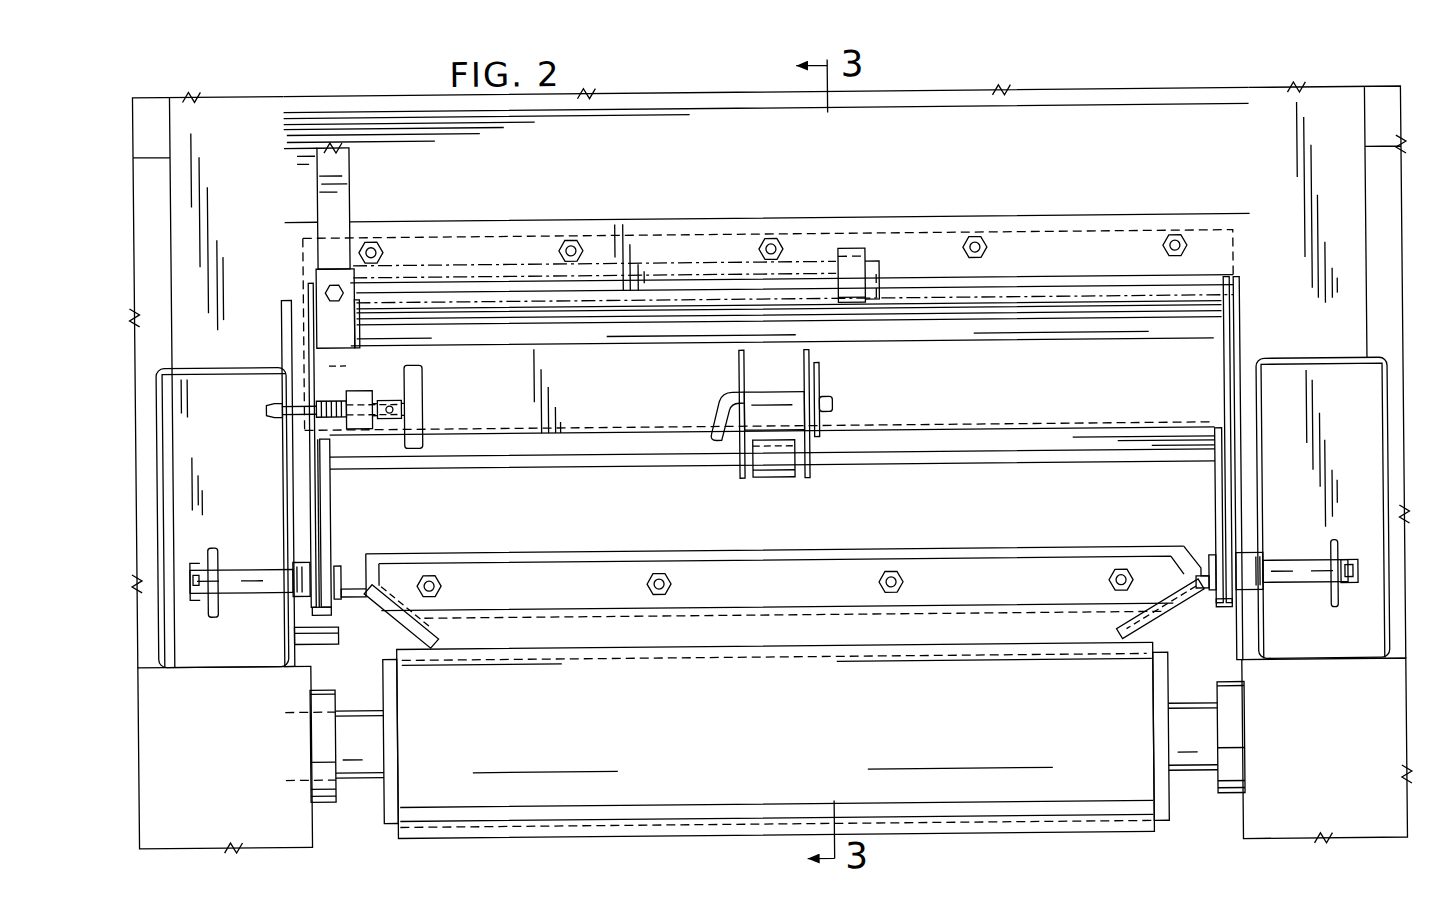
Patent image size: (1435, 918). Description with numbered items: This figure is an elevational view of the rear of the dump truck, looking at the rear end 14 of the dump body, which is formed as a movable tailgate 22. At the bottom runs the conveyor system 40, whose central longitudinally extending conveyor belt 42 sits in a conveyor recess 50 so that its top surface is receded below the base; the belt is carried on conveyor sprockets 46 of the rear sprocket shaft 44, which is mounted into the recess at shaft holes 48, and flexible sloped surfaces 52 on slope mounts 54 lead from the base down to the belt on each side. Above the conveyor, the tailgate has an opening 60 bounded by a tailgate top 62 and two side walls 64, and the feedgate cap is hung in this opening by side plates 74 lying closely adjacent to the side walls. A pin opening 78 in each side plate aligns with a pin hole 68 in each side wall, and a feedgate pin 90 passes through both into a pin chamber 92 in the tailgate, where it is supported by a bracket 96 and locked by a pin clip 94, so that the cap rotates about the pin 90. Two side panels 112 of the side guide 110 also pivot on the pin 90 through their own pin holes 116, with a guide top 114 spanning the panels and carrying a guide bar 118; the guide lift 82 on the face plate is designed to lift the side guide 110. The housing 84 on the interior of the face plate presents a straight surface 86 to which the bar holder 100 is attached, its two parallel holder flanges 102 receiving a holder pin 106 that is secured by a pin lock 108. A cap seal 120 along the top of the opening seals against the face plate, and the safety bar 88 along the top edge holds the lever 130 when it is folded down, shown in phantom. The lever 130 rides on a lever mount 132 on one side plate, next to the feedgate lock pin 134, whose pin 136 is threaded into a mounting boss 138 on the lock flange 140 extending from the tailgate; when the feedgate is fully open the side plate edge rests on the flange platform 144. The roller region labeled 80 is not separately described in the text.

The rear end 14 is at (1274, 95).
The tailgate 22 is at (252, 92).
The conveyor system 40 is at (538, 839).
The conveyor belt 42 is at (1075, 833).
The rear sprocket shaft 44 is at (355, 769).
The conveyor sprocket 46 is at (1163, 812).
The shaft hole 48 is at (325, 708).
The conveyor recess 50 is at (312, 816).
The sloped surface 52 is at (1135, 631).
The slope mount 54 is at (1200, 576).
The opening 60 is at (1053, 282).
The tailgate top 62 is at (1095, 283).
The side wall 64 is at (1240, 474).
The pin hole 68 is at (1262, 553).
The side plate 74 is at (1232, 506).
The pin opening 78 is at (338, 611).
The roller top surface 80 is at (945, 662).
The guide lift 82 is at (820, 553).
The housing 84 is at (597, 416).
The straight surface 86 is at (957, 410).
The safety bar 88 is at (854, 249).
The feedgate pin 90 is at (1302, 583).
The pin chamber 92 is at (1331, 393).
The pin clip 94 is at (1348, 592).
The bracket 96 is at (1336, 548).
The bar holder 100 is at (740, 473).
The holder flange 102 is at (805, 355).
The holder pin 106 is at (712, 409).
The pin lock 108 is at (818, 374).
The side guide 110 is at (522, 468).
The side panel 112 is at (1215, 497).
The guide top 114 is at (645, 447).
The pin hole 116 is at (333, 564).
The guide bar 118 is at (772, 465).
The cap seal 120 is at (996, 290).
The lever 130 is at (346, 176).
The lever mount 132 is at (332, 326).
The feedgate lock pin 134 is at (426, 380).
The pin 136 is at (268, 405).
The mounting boss 138 is at (353, 391).
The lock flange 140 is at (288, 451).
The flange platform 144 is at (322, 633).